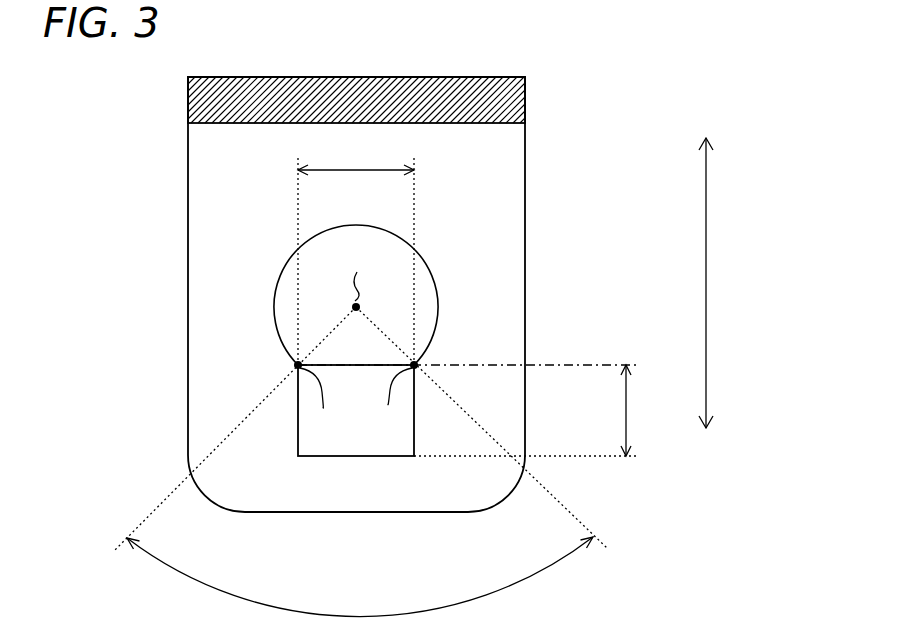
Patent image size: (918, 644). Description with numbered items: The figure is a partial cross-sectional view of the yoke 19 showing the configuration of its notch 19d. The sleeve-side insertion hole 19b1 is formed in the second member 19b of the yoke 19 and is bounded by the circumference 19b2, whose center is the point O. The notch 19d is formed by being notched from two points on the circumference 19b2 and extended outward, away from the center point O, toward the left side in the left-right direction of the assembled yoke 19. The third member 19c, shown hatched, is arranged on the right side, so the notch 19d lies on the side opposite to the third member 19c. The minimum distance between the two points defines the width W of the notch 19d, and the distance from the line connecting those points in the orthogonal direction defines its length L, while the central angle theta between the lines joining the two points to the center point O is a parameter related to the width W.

The yoke 19 is at (142, 147).
The second member 19b is at (510, 188).
The sleeve-side insertion hole 19b1 is at (436, 296).
The circumference 19b2 is at (274, 311).
The third member 19c is at (525, 103).
The notch 19d is at (347, 456).